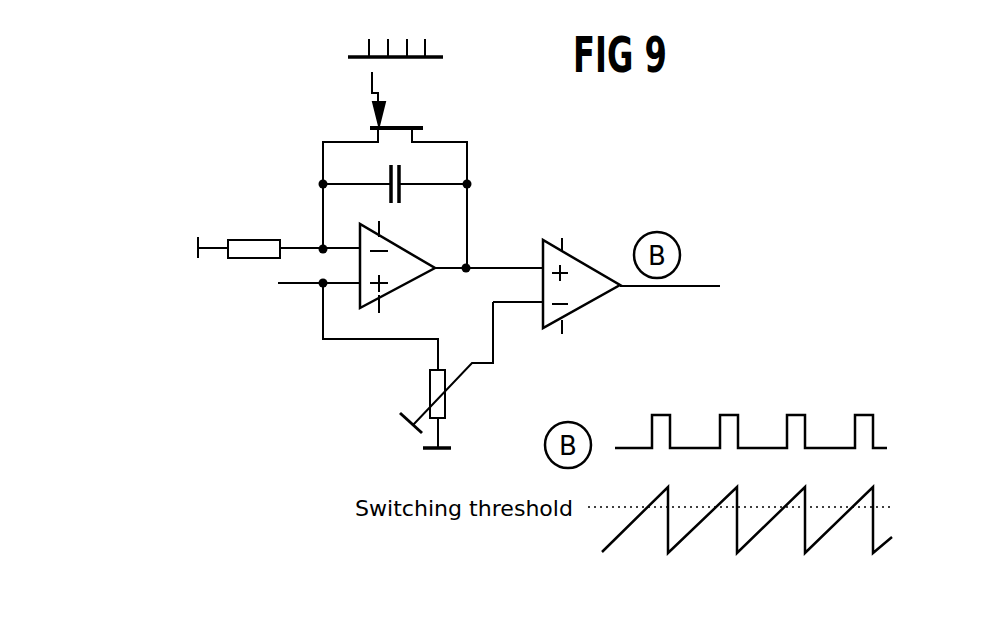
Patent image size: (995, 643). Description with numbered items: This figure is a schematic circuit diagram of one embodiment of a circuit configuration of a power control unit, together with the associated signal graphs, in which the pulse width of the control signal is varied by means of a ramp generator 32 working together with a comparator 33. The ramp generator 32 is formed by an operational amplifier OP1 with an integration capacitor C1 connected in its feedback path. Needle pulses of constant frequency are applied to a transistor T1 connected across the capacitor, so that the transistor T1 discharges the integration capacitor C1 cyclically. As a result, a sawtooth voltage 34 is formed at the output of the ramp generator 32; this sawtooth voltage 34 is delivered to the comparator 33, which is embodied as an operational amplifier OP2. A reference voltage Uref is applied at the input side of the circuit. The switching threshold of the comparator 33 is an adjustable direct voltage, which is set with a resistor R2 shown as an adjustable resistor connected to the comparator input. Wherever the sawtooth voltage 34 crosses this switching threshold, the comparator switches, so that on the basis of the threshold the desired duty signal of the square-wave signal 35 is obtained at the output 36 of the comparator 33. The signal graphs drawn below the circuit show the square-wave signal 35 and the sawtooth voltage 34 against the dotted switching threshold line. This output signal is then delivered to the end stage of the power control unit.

The ramp generator 32 is at (368, 310).
The comparator 33 is at (581, 270).
The sawtooth voltage 34 is at (636, 554).
The square-wave signal 35 is at (770, 403).
The output 36 is at (697, 286).
The transistor T1 is at (395, 128).
The integration capacitor C1 is at (400, 193).
The resistor R2 is at (445, 398).
The operational amplifier OP1 is at (398, 288).
The operational amplifier OP2 is at (583, 307).
The reference voltage Uref is at (292, 283).